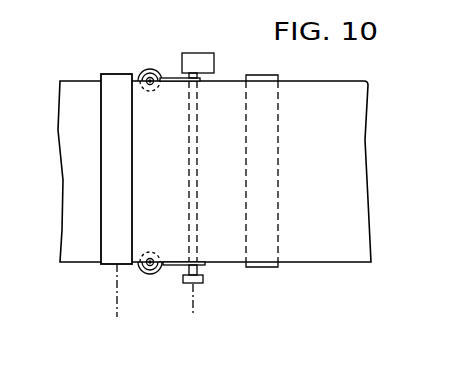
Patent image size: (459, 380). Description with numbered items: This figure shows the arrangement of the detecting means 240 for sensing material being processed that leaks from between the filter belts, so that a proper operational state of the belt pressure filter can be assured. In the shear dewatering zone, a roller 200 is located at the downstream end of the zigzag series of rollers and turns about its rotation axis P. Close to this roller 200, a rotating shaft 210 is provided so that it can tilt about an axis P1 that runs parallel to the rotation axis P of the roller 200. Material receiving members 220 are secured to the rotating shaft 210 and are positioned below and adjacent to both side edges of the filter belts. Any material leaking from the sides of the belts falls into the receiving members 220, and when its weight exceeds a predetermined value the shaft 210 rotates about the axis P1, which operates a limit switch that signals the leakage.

The roller 200 is at (110, 77).
The material receiving members 220 is at (147, 70).
The detecting means 240 is at (171, 54).
The rotating shaft 210 is at (200, 269).
The rotation axis P is at (117, 270).
The axis P1 is at (193, 308).